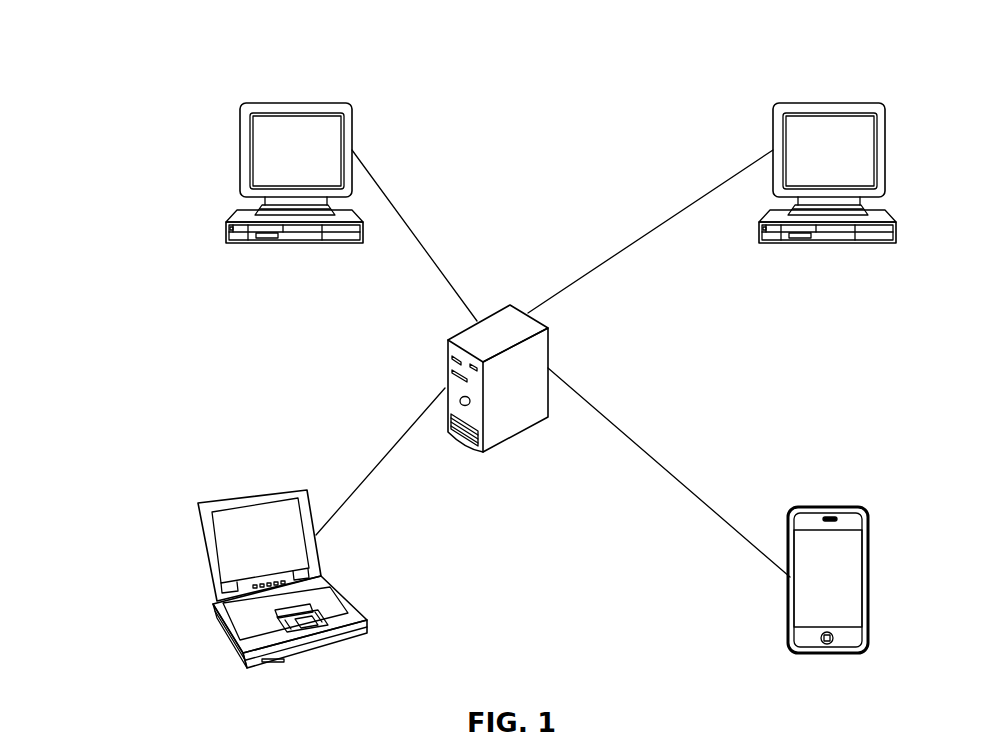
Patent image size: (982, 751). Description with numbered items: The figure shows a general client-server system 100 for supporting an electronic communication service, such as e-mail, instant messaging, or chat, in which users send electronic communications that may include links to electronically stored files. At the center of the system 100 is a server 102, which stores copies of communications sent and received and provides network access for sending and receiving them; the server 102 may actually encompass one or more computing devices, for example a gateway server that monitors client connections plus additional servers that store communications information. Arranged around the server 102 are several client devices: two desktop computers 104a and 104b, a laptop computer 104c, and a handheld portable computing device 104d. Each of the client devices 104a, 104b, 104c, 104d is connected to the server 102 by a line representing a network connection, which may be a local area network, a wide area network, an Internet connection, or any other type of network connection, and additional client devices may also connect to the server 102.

The client-server system 100 is at (124, 36).
The server 102 is at (495, 311).
The desktop computer client device 104a is at (293, 103).
The desktop computer client device 104b is at (826, 103).
The laptop computer client device 104c is at (254, 496).
The handheld portable computing client device 104d is at (828, 507).